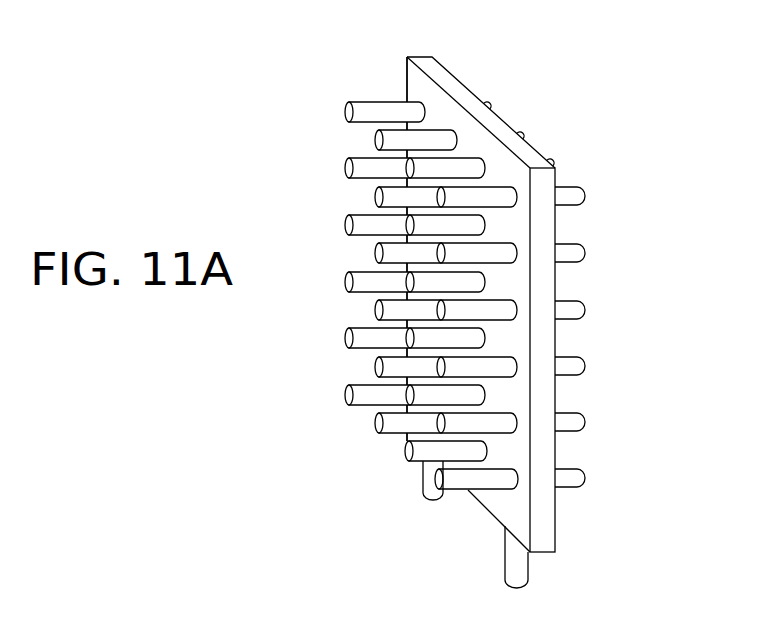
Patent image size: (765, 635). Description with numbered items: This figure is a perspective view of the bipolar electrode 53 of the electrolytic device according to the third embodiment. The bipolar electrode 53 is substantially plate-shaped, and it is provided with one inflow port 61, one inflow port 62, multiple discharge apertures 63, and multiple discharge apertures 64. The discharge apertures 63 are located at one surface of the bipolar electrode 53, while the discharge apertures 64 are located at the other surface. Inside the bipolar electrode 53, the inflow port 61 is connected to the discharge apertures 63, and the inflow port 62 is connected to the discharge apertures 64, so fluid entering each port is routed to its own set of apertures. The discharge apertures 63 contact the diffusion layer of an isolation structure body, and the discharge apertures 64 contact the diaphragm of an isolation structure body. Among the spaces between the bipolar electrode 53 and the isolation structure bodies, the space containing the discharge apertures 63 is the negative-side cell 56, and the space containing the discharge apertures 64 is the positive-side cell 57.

The bipolar electrode 53 is at (545, 91).
The negative-side cell 56 is at (360, 140).
The positive-side cell 57 is at (565, 393).
The inflow port 61 is at (520, 568).
The inflow port 62 is at (428, 487).
The discharge apertures 63 is at (367, 108).
The discharge apertures 64 is at (573, 192).